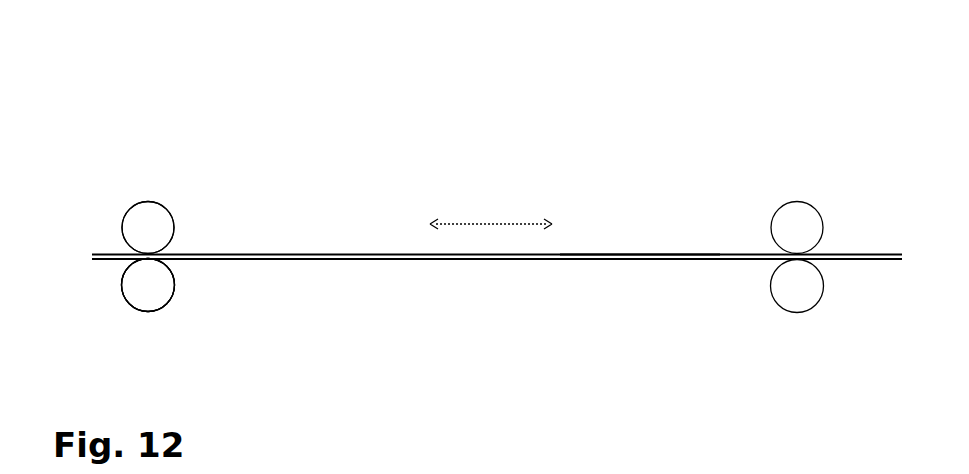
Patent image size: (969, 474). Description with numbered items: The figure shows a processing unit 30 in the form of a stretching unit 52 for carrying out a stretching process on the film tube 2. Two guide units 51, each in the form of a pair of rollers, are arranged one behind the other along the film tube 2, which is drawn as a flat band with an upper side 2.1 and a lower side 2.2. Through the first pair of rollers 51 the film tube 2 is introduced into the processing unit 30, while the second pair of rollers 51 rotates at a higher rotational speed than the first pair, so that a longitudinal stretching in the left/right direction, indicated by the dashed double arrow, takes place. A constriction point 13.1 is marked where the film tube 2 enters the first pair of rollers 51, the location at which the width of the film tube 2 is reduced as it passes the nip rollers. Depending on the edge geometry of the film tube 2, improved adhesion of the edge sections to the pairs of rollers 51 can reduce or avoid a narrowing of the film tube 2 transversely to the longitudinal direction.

The film tube 2 is at (340, 240).
The first side of strip 2.1 is at (624, 253).
The second side of strip 2.2 is at (657, 260).
The constriction point 13.1 is at (108, 243).
The processing unit 30 is at (112, 140).
The stretching unit 52 is at (148, 285).
The guide unit 51 is at (152, 325).